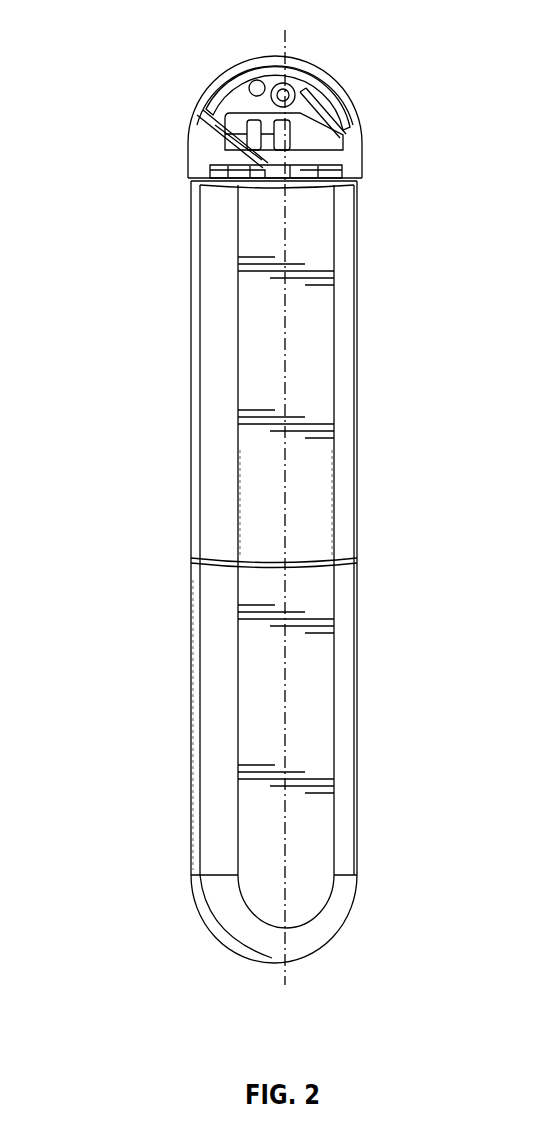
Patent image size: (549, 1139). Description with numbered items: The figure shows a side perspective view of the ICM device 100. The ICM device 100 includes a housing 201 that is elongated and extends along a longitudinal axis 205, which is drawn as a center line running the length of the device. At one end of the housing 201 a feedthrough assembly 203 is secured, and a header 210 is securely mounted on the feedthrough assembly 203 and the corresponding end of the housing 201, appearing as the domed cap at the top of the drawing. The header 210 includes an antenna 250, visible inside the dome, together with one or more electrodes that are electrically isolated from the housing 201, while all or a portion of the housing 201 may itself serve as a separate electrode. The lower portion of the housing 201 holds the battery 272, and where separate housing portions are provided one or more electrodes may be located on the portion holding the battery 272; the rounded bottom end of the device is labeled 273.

The ICM device 100 is at (142, 24).
The header 210 is at (251, 66).
The antenna 250 is at (204, 110).
The feedthrough assembly 203 is at (357, 160).
The housing 201 is at (357, 378).
The longitudinal axis 205 is at (326, 503).
The battery 272 is at (357, 752).
The rounded bottom end 273 is at (342, 906).